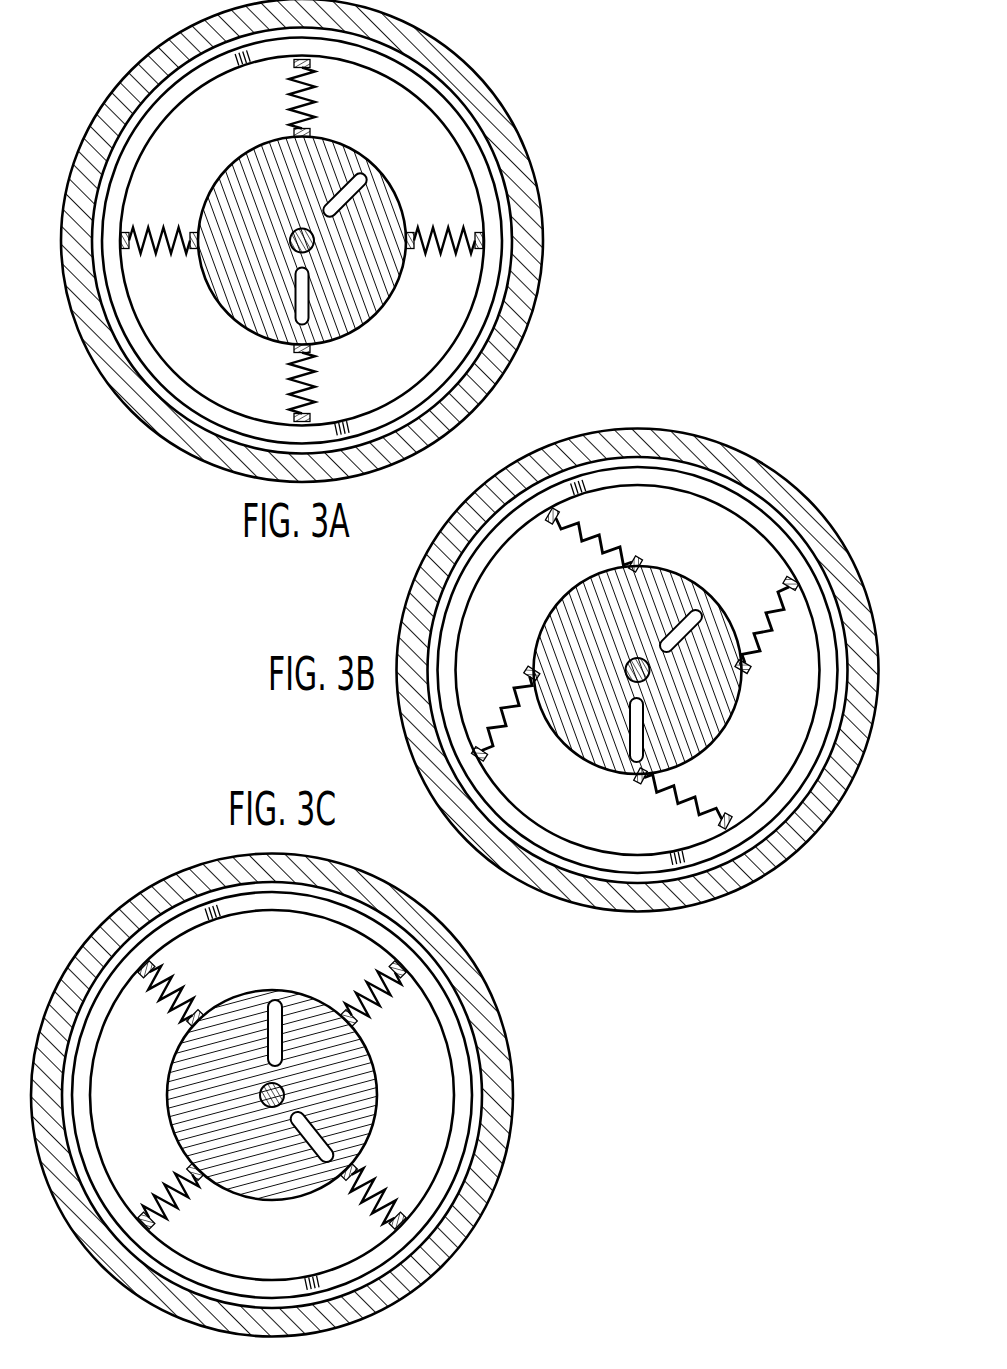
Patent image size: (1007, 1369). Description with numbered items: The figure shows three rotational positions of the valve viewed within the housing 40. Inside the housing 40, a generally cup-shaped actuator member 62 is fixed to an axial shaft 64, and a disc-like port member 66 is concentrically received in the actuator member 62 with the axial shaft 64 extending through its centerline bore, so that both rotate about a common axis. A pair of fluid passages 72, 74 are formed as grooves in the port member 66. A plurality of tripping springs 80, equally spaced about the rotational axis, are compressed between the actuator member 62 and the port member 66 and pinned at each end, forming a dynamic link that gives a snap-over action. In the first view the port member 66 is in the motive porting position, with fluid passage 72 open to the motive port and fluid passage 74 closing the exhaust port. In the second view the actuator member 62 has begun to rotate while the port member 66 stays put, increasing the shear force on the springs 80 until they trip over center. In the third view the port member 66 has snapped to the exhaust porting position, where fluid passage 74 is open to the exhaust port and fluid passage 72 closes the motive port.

In FIG. 3A, the housing 40 is at (88, 148).
In FIG. 3B, the housing 40 is at (873, 700).
In FIG. 3C, the housing 40 is at (497, 1140).
In FIG. 3A, the actuator member 62 is at (175, 105).
In FIG. 3B, the actuator member 62 is at (729, 505).
In FIG. 3C, the actuator member 62 is at (458, 1048).
In FIG. 3A, the axial shaft 64 is at (305, 228).
In FIG. 3B, the axial shaft 64 is at (648, 673).
In FIG. 3C, the axial shaft 64 is at (258, 1093).
In FIG. 3A, the port member 66 is at (262, 161).
In FIG. 3B, the port member 66 is at (682, 597).
In FIG. 3C, the port member 66 is at (353, 1078).
In FIG. 3A, the fluid passage 72 is at (298, 322).
In FIG. 3B, the fluid passage 72 is at (633, 740).
In FIG. 3C, the fluid passage 72 is at (312, 1133).
In FIG. 3A, the fluid passage 74 is at (362, 183).
In FIG. 3B, the fluid passage 74 is at (697, 607).
In FIG. 3C, the fluid passage 74 is at (277, 1030).
In FIG. 3A, the springs 80 is at (324, 94).
In FIG. 3B, the springs 80 is at (603, 537).
In FIG. 3C, the springs 80 is at (181, 992).